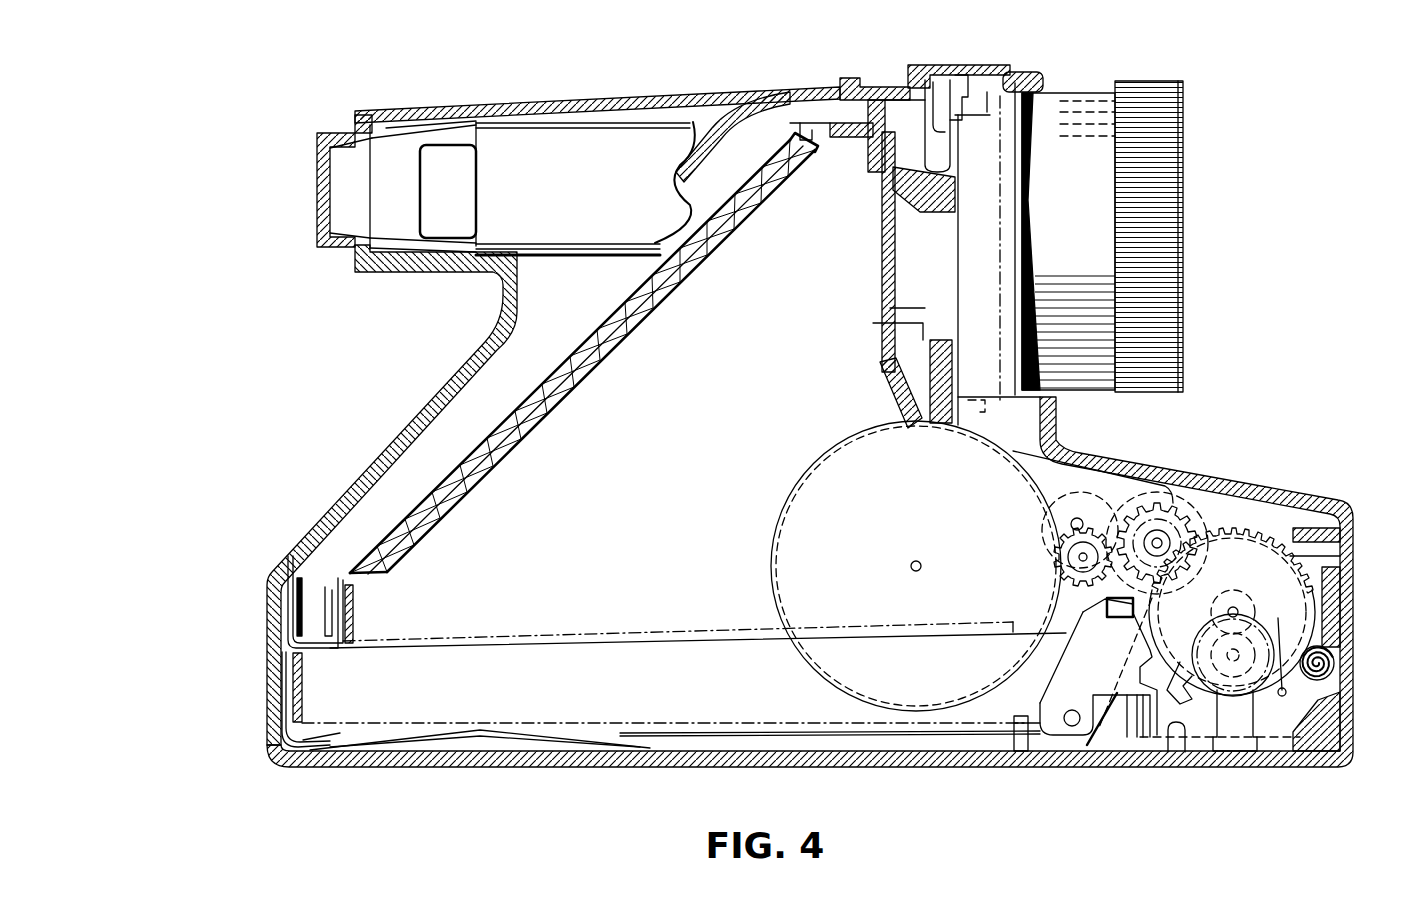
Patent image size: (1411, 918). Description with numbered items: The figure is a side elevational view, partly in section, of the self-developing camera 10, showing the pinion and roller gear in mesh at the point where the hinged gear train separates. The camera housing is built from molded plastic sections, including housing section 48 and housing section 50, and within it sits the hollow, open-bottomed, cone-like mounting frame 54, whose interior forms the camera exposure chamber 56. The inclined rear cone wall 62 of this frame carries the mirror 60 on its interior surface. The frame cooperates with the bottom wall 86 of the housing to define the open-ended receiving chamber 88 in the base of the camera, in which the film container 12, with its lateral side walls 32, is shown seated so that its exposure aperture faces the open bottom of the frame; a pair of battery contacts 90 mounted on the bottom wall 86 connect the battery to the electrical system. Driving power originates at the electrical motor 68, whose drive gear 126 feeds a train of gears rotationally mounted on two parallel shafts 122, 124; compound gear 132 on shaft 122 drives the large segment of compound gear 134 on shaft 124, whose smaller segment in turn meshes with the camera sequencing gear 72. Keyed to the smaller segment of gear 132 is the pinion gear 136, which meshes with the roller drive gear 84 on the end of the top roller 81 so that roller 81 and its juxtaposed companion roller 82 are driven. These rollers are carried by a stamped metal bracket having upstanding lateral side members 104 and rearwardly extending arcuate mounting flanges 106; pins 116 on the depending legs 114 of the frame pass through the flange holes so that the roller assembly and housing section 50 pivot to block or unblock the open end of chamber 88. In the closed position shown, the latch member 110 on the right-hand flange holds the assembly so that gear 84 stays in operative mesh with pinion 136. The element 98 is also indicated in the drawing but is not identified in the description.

The self-developing camera 10 is at (1236, 226).
The film container 12 is at (805, 718).
The lateral side walls 32 is at (910, 720).
The housing section 48 is at (1310, 493).
The housing section 50 is at (1222, 772).
The mounting frame 54 is at (742, 180).
The camera exposure chamber 56 is at (587, 413).
The mirror 60 is at (707, 262).
The inclined rear cone wall 62 is at (607, 323).
The electrical motor 68 is at (1112, 482).
The sequencing gear 72 is at (863, 500).
The roller 81 is at (1238, 586).
The roller 82 is at (1226, 672).
The roller drive gear 84 is at (1267, 557).
The bottom wall 86 is at (640, 768).
The receiving chamber 88 is at (340, 733).
The battery contacts 90 is at (417, 740).
The torsion spring 98 is at (1352, 662).
The lateral side members 104 is at (1272, 723).
The arcuate mounting flanges 106 is at (1062, 688).
The latch member 110 is at (1110, 617).
The depending legs 114 is at (1022, 740).
The pins 116 is at (1072, 726).
The shaft 122 is at (1163, 543).
The shaft 124 is at (1080, 560).
The drive gear 126 is at (1040, 532).
The compound gear 132 is at (1180, 503).
The compound gear 134 is at (1062, 557).
The pinion gear 136 is at (1167, 537).